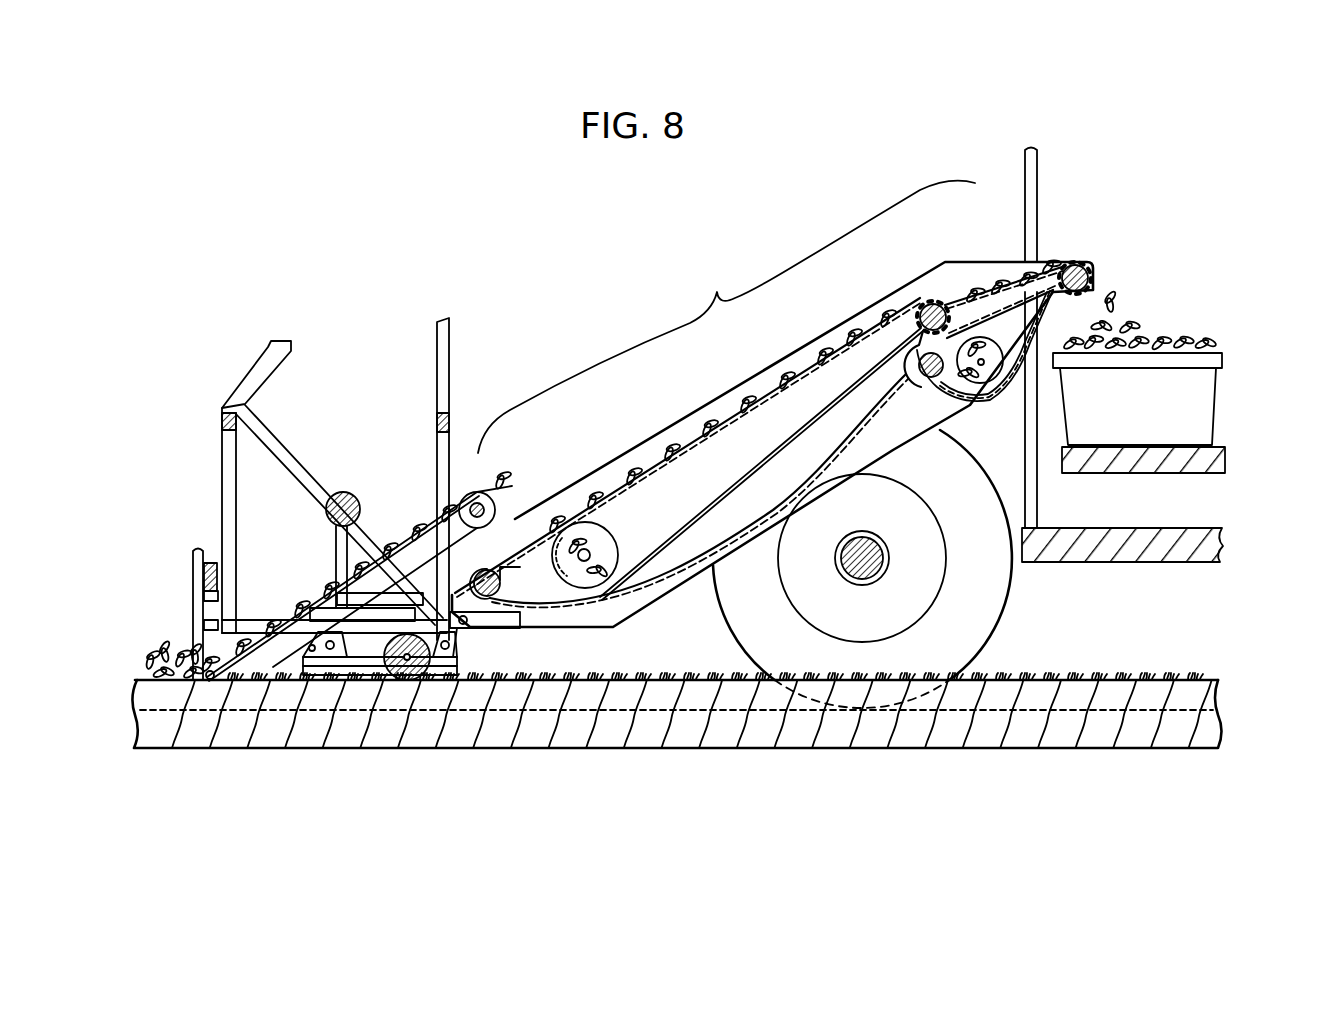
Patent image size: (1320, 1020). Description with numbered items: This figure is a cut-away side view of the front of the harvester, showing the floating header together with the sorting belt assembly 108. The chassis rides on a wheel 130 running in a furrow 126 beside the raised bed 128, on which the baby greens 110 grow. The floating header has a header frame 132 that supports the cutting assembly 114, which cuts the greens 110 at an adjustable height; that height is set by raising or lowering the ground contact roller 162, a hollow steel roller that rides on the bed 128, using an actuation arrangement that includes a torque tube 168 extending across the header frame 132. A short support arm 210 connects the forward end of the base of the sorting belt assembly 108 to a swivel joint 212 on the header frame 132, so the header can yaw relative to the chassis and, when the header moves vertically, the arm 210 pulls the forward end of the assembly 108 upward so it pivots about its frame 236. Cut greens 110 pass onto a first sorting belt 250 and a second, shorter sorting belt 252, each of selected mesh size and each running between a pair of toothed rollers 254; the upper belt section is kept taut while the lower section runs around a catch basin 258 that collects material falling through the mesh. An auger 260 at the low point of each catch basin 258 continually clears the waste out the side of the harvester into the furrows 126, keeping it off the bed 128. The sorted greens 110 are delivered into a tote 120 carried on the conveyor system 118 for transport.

The sorting belt assembly 108 is at (828, 337).
The baby greens 110 is at (157, 660).
The cutting assembly 114 is at (195, 545).
The conveyor system 118 is at (1222, 460).
The tote 120 is at (1207, 407).
The furrow 126 is at (1218, 750).
The raised bed 128 is at (1218, 682).
The wheel 130 is at (968, 648).
The header frame 132 is at (250, 372).
The ground contact roller 162 is at (393, 679).
The torque tube 168 is at (348, 490).
The support arm 210 is at (450, 657).
The swivel joint 212 is at (467, 622).
The frame 236 is at (658, 602).
The first sorting belt 250 is at (707, 437).
The second sorting belt 252 is at (1017, 297).
The toothed roller 254 is at (922, 307).
The catch basin 258 is at (742, 480).
The auger 260 is at (612, 538).